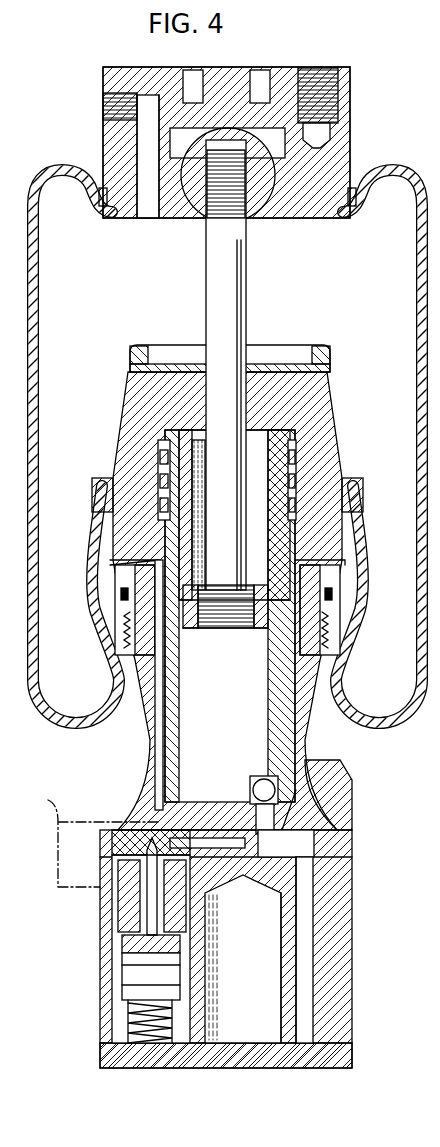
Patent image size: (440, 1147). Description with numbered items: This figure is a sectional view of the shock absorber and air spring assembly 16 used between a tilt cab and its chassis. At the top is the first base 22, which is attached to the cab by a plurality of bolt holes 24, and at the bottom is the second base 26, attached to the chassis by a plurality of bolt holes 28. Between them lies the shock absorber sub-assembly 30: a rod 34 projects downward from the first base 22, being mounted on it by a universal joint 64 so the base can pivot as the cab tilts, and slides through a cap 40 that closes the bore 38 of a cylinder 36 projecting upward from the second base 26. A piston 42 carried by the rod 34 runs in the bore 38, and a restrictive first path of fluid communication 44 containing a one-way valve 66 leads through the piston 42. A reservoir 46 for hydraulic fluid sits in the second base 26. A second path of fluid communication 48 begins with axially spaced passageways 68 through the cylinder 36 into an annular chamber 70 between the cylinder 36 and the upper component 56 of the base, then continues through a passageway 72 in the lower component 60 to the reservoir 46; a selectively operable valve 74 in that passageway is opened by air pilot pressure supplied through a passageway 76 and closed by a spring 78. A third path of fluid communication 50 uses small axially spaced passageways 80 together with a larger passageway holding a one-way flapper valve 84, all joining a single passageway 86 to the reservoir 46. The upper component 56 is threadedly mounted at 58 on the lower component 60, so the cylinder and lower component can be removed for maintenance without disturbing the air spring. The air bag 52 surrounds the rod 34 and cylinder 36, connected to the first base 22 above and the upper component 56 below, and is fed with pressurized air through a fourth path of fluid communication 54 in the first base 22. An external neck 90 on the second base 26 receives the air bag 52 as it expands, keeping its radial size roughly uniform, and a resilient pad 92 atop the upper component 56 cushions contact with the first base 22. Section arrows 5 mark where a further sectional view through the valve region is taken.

The shock absorber and air spring assembly 16 is at (404, 152).
The first base 22 is at (353, 88).
The bolt holes 24 is at (318, 70).
The second base 26 is at (353, 956).
The bolt holes 28 is at (345, 1034).
The shock absorber sub-assembly 30 is at (318, 402).
The rod 34 is at (246, 310).
The cylinder 36 is at (158, 456).
The bore 38 is at (296, 736).
The cap 40 is at (300, 437).
The piston 42 is at (193, 632).
The first path of fluid communication 44 is at (257, 630).
The reservoir 46 is at (254, 1009).
The second path of fluid communication 48 is at (93, 840).
The third path of fluid communication 50 is at (368, 996).
The air bag 52 is at (40, 306).
The fourth path of fluid communication 54 is at (151, 219).
The upper component 56 is at (345, 478).
The threaded mounting 58 is at (330, 626).
The lower component 60 is at (352, 854).
The universal joint 64 is at (262, 220).
The one-way valve 66 is at (333, 597).
The axially spaced passageways 68 is at (168, 456).
The annular chamber 70 is at (296, 462).
The passageway 72 is at (158, 712).
The selectively operable valve 74 is at (147, 922).
The passageway 76 is at (90, 946).
The spring 78 is at (165, 1044).
The small axially spaced passageways 80 is at (298, 822).
The one-way flapper valve 84 is at (262, 778).
The single passageway 86 is at (315, 878).
The external neck 90 is at (312, 768).
The resilient pad 92 is at (325, 352).
The section line 5- 5 is at (146, 793).